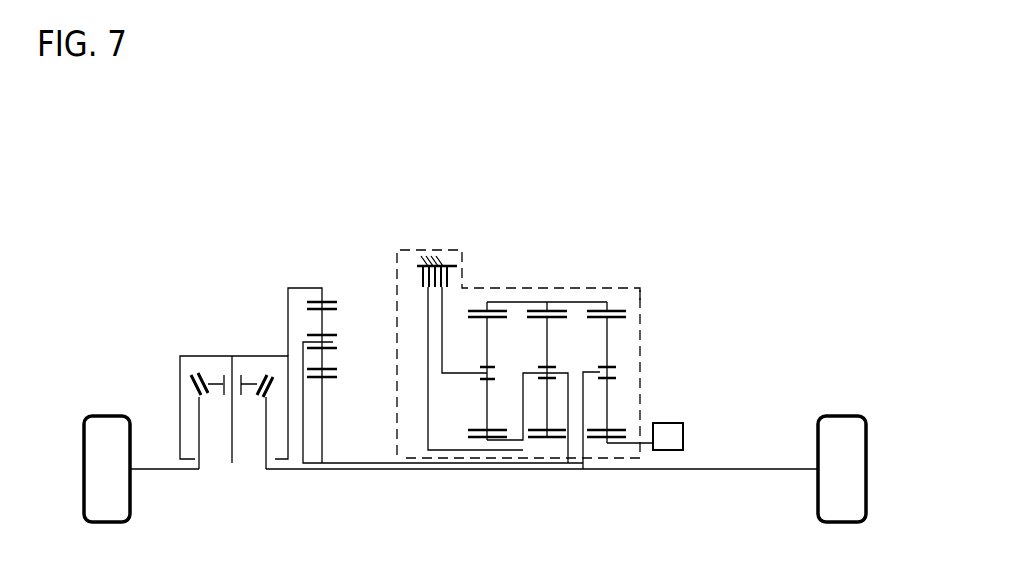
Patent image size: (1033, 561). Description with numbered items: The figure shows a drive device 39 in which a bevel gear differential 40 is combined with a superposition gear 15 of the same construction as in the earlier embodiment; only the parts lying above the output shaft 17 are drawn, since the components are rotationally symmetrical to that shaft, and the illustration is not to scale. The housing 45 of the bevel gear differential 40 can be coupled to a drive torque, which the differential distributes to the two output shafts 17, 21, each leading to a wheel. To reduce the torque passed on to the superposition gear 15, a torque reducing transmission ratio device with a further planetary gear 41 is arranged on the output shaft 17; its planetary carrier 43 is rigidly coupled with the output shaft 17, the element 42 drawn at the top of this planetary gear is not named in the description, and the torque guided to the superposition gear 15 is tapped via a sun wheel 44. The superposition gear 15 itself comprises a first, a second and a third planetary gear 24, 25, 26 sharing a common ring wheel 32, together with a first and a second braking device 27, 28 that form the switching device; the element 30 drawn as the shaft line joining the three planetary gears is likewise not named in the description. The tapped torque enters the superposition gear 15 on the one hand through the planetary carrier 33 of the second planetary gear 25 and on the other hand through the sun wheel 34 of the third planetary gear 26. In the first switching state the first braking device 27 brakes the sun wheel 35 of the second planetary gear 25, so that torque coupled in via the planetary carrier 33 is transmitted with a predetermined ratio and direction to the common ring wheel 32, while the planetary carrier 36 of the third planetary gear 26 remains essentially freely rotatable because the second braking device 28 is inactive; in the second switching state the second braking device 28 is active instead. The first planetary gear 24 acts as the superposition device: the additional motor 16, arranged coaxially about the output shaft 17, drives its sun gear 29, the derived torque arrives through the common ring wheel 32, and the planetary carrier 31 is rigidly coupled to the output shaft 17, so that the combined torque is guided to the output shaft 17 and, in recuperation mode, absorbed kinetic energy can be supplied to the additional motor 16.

The superposition gear 15 is at (647, 307).
The additional motor 16 is at (683, 423).
The output shaft 17 is at (336, 470).
The output shaft 21 is at (180, 470).
The first planetary gear 24 is at (605, 297).
The second planetary gear 25 is at (572, 297).
The third planetary gear 26 is at (510, 297).
The first braking device 27 is at (420, 268).
The second braking device 28 is at (457, 268).
The sun gear 29 is at (602, 444).
The shaft 30 is at (607, 333).
The planetary carrier 31 is at (622, 369).
The common ring wheel 32 is at (575, 305).
The planetary carrier 33 is at (528, 373).
The sun wheel 34 is at (470, 433).
The sun wheel 35 is at (545, 441).
The planetary carrier 36 is at (468, 372).
The drive device 39 is at (549, 172).
The bevel gear differential 40 is at (203, 323).
The further planetary gear 41 is at (348, 327).
The gear 42 is at (325, 296).
The planetary carrier 43 is at (334, 342).
The sun wheel 44 is at (323, 427).
The housing 45 is at (259, 354).